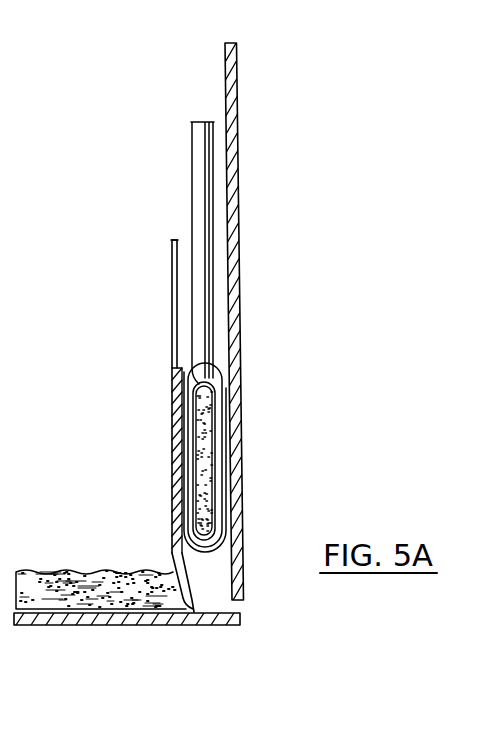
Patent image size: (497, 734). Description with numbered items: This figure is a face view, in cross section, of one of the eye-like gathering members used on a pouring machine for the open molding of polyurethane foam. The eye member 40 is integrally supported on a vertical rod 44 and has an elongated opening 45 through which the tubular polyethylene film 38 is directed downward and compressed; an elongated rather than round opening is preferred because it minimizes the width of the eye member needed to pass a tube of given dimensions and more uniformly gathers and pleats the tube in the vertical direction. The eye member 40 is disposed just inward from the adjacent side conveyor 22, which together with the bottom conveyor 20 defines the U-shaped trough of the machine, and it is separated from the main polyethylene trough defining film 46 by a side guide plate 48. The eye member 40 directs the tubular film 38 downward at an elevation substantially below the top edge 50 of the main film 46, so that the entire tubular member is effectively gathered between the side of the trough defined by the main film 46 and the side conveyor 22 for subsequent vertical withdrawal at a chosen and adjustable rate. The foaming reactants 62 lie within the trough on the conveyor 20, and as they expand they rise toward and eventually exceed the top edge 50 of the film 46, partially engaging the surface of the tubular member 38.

The conveyor 20 is at (240, 618).
The side conveyor 22 is at (238, 67).
The tubular polyethylene film 38 is at (193, 440).
The eye member 40 is at (208, 373).
The vertical rod 44 is at (193, 157).
The elongated opening 45 is at (212, 396).
The main polyethylene trough defining film 46 is at (172, 345).
The side guide plate 48 is at (182, 487).
The top edge of the film 50 is at (171, 240).
The foaming reactants 62 is at (62, 590).